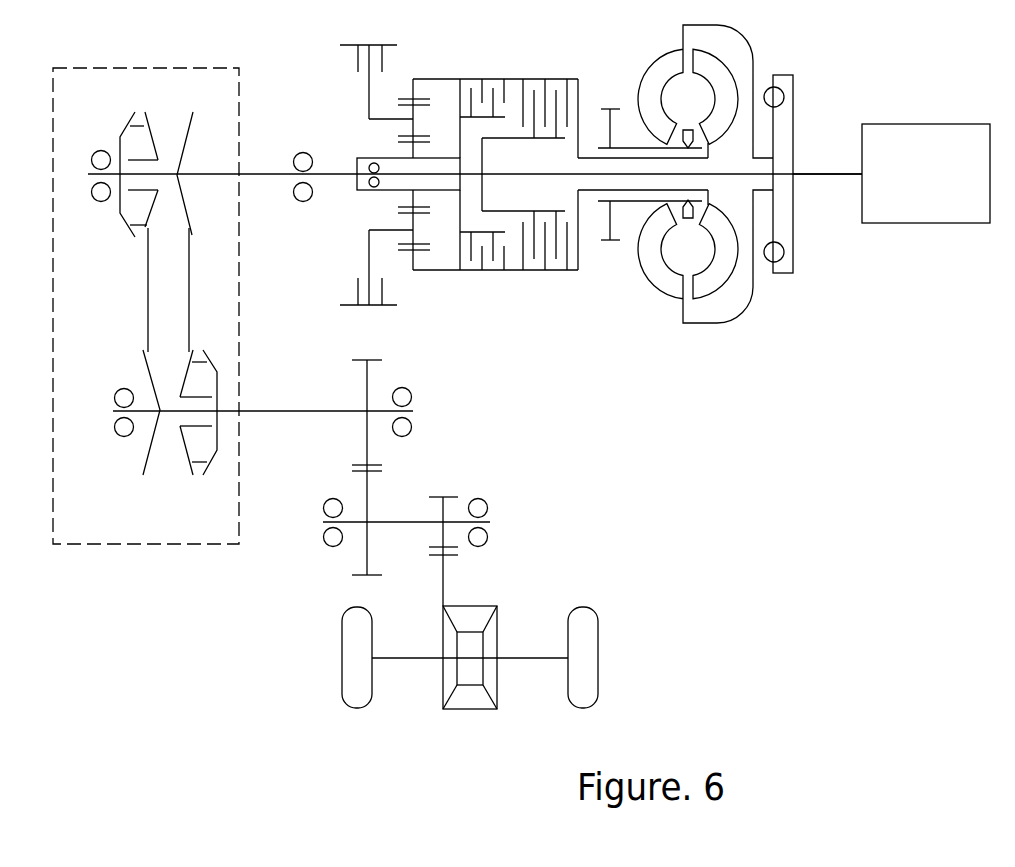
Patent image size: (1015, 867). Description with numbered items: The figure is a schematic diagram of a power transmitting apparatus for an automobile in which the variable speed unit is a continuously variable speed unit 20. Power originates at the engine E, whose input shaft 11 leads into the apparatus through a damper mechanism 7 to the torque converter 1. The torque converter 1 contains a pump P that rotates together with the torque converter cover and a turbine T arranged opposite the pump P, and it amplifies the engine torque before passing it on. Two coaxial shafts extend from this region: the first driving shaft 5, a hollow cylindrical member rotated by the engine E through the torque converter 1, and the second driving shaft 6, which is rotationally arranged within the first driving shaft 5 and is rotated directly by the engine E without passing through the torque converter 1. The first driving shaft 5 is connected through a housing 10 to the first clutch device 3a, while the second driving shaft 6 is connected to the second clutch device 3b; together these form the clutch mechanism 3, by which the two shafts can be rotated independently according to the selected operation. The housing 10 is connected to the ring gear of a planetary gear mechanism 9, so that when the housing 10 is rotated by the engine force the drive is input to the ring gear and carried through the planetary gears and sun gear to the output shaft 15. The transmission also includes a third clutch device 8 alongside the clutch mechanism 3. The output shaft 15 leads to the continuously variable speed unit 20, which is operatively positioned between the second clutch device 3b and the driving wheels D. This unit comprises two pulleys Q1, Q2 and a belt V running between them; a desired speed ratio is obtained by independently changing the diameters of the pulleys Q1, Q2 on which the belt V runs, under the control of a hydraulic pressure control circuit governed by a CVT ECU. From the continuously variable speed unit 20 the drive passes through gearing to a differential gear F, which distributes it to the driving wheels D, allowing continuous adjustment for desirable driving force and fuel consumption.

The torque converter 1 is at (710, 163).
The pump P is at (705, 91).
The turbine T is at (715, 103).
The damper mechanism 7 is at (800, 80).
The input shaft 11 is at (822, 173).
The engine E is at (934, 123).
The housing 10 is at (573, 78).
The planetary gear mechanism 9 is at (424, 78).
The third clutch device 8 is at (353, 62).
The output shaft 15 is at (357, 165).
The second driving shaft 6 is at (596, 192).
The first driving shaft 5 is at (632, 200).
The clutch mechanism 3 is at (513, 236).
The first clutch device 3a is at (483, 275).
The second clutch device 3b is at (552, 275).
The pulley Q1 is at (115, 130).
The pulley Q2 is at (128, 362).
The belt V is at (191, 306).
The continuously variable speed unit 20 is at (240, 356).
The driving wheel D is at (341, 683).
The differential gear F is at (497, 693).